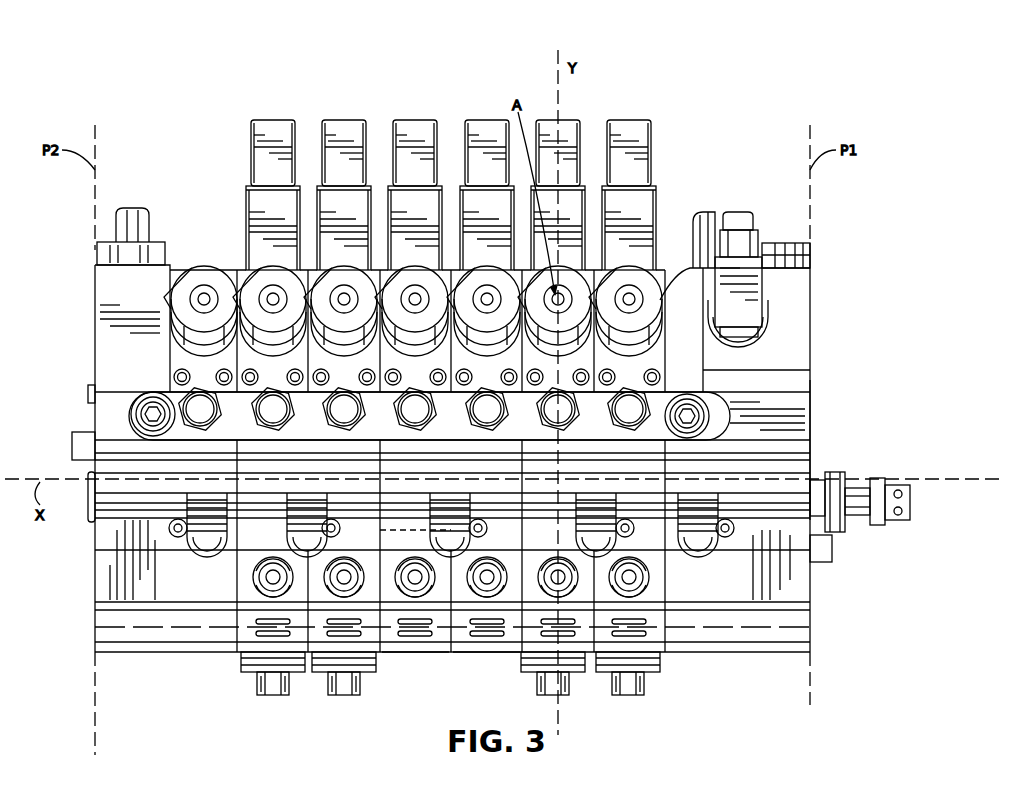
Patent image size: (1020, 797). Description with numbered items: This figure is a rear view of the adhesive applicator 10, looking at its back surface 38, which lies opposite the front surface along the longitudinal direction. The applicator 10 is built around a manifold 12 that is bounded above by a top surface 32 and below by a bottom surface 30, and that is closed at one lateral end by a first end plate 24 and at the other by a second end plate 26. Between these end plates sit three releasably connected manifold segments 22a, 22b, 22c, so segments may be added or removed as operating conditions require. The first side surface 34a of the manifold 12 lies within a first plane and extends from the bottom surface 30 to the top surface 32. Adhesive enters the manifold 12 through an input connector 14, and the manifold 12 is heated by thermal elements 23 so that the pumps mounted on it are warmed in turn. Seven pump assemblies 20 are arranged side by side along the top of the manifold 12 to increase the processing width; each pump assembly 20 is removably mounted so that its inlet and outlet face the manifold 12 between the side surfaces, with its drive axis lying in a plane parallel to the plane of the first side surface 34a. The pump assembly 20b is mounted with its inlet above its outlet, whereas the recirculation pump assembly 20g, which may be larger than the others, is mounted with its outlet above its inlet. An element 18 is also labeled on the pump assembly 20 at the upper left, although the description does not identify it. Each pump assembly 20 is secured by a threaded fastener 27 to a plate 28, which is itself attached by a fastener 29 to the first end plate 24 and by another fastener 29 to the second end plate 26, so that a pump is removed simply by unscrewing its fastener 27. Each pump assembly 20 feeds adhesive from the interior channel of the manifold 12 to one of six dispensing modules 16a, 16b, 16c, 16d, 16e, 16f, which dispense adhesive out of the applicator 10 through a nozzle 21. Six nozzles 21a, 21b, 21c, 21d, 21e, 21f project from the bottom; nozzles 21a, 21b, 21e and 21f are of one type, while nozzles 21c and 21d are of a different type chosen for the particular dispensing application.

The applicator 10 is at (165, 114).
The manifold 12 is at (125, 655).
The input connector 14 is at (778, 284).
The dispensing module 16a is at (625, 118).
The dispensing module 16b is at (557, 118).
The dispensing module 16c is at (490, 118).
The dispensing module 16d is at (419, 118).
The dispensing module 16e is at (348, 118).
The dispensing module 16f is at (278, 118).
The valve cartridge 18 is at (240, 176).
The pump assembly 20 is at (237, 268).
The pump assembly 20b is at (582, 358).
The recirculation pump assembly 20g is at (162, 301).
The nozzle 21 is at (663, 680).
The nozzle 21a is at (630, 697).
The nozzle 21b is at (540, 695).
The nozzle 21c is at (475, 656).
The nozzle 21d is at (425, 656).
The nozzle 21e is at (340, 697).
The nozzle 21f is at (265, 697).
The manifold segment 22a is at (648, 534).
The manifold segment 22b is at (393, 534).
The manifold segment 22c is at (256, 594).
The thermal element 23 is at (176, 541).
The first end plate 24 is at (770, 395).
The second end plate 26 is at (147, 360).
The fastener 27 is at (250, 421).
The plate 28 is at (592, 428).
The fastener 29 is at (126, 414).
The bottom surface 30 is at (180, 655).
The top surface 32 is at (780, 240).
The first side surface 34a is at (812, 393).
The back surface 38 is at (750, 560).